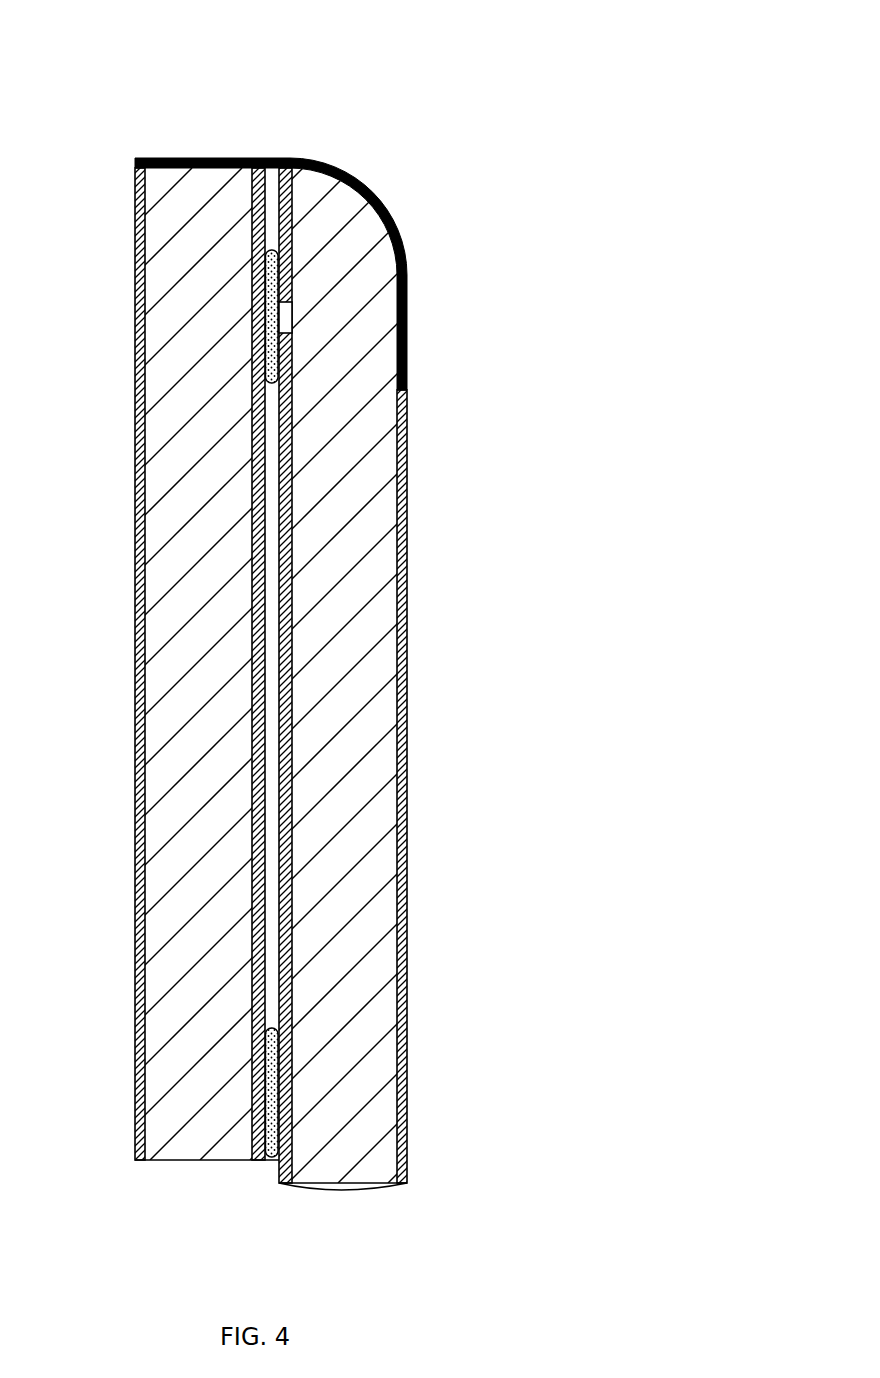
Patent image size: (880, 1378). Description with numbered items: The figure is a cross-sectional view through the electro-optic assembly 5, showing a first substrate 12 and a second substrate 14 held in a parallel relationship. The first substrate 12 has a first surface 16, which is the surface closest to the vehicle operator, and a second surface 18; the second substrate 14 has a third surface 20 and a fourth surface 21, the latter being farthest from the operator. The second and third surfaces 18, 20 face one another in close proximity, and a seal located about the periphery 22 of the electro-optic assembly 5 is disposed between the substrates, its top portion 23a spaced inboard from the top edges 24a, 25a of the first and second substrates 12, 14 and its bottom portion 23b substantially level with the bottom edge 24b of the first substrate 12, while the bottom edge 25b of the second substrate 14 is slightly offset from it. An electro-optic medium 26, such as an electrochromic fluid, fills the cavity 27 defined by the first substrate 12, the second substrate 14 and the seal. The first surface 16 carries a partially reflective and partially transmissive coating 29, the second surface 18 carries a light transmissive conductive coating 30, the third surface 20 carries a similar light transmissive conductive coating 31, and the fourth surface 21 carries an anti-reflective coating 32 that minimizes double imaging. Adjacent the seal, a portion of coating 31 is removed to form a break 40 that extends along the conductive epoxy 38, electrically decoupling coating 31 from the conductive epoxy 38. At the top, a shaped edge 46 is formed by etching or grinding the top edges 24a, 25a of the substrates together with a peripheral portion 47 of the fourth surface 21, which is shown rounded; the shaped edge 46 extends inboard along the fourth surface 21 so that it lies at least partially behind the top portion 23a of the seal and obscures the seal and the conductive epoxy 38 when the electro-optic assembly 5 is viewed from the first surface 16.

The electro-optic assembly 5 is at (472, 50).
The first substrate 12 is at (187, 193).
The second substrate 14 is at (340, 180).
The first surface 16 is at (146, 242).
The second surface 18 is at (252, 195).
The third surface 20 is at (292, 1086).
The fourth surface 21 is at (396, 556).
The periphery 22 is at (266, 146).
The top portion of seal 23a is at (268, 362).
The bottom portion of seal 23b is at (262, 1143).
The top edge of first substrate 24a is at (160, 158).
The bottom edge of first substrate 24b is at (162, 1160).
The top edge of second substrate 25a is at (299, 160).
The bottom edge of second substrate 25b is at (336, 1200).
The electro-optic medium 26 is at (270, 465).
The cavity 27 is at (270, 877).
The partially light reflective and partially light transmissive coating 29 is at (140, 452).
The light transmissive and conductive coating 30 is at (268, 1155).
The light transmissive and conductive coating 31 is at (360, 202).
The anti-reflective coating 32 is at (400, 668).
The conductive epoxy 38 is at (272, 185).
The break 40 is at (288, 312).
The shaped edge 46 is at (372, 182).
The peripheral portion 47 is at (396, 257).